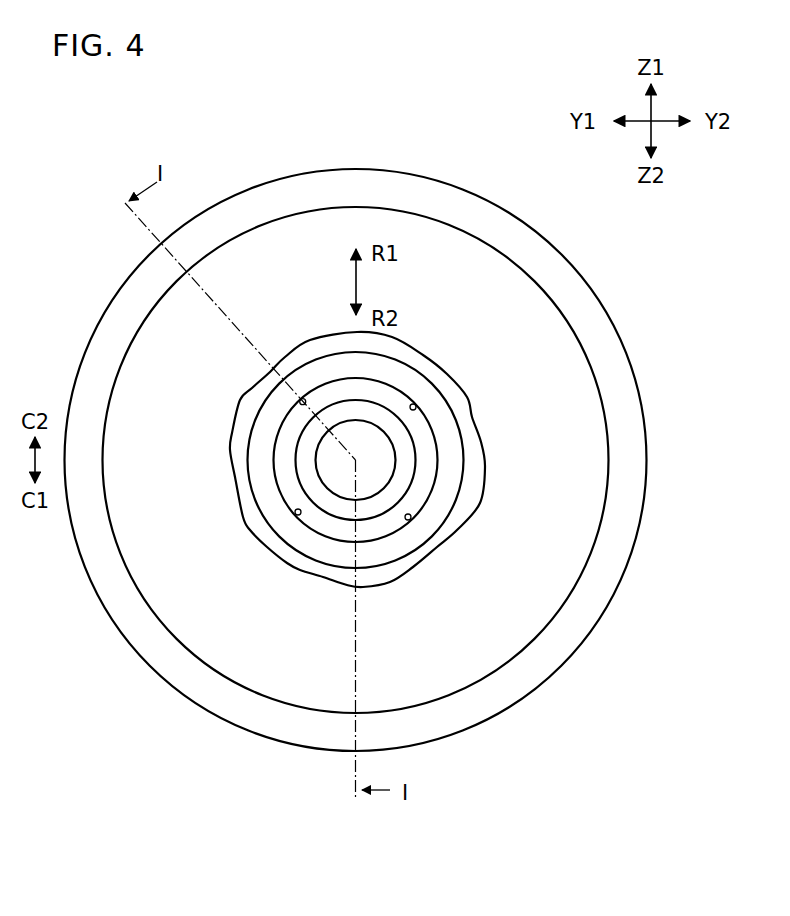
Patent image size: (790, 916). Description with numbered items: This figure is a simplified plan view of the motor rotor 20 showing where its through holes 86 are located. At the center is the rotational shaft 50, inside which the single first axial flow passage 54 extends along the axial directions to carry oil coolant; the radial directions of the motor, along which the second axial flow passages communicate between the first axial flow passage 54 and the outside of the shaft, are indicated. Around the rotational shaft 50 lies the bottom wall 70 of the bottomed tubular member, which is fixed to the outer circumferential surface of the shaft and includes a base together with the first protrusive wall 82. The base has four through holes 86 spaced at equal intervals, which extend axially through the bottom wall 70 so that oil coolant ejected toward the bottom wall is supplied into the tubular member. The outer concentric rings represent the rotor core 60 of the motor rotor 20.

The motor rotor 20 is at (367, 138).
The rotational shaft 50 is at (297, 482).
The first axial flow passage 54 is at (382, 472).
The rotor core 60 is at (552, 653).
The bottom wall 70 is at (567, 398).
The first protrusive wall 82 is at (383, 542).
The through holes 86 is at (416, 410).